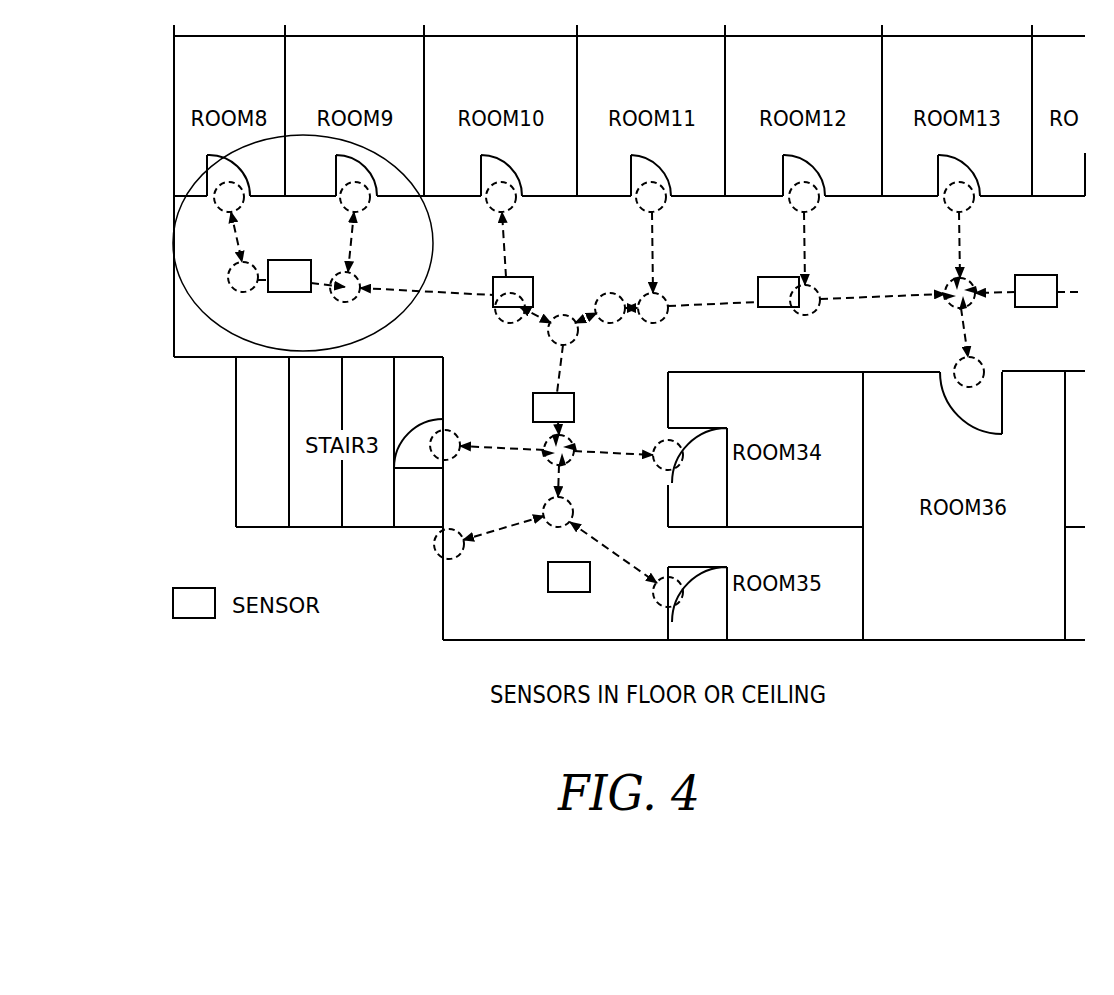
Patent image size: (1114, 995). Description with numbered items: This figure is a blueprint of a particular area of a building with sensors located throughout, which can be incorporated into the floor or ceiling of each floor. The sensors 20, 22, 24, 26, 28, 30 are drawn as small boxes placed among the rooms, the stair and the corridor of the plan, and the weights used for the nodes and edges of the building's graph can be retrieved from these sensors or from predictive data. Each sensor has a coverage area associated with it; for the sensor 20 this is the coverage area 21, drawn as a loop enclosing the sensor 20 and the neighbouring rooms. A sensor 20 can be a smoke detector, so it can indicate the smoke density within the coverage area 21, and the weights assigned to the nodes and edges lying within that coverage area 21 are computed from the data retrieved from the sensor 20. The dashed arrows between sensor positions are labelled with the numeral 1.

The wireless communication link 1 is at (654, 397).
The sensor 20 is at (291, 260).
The coverage area 21 is at (187, 236).
The sensor 22 is at (513, 277).
The sensor 24 is at (778, 277).
The sensor 26 is at (1033, 275).
The sensor 28 is at (552, 393).
The sensor 30 is at (567, 562).